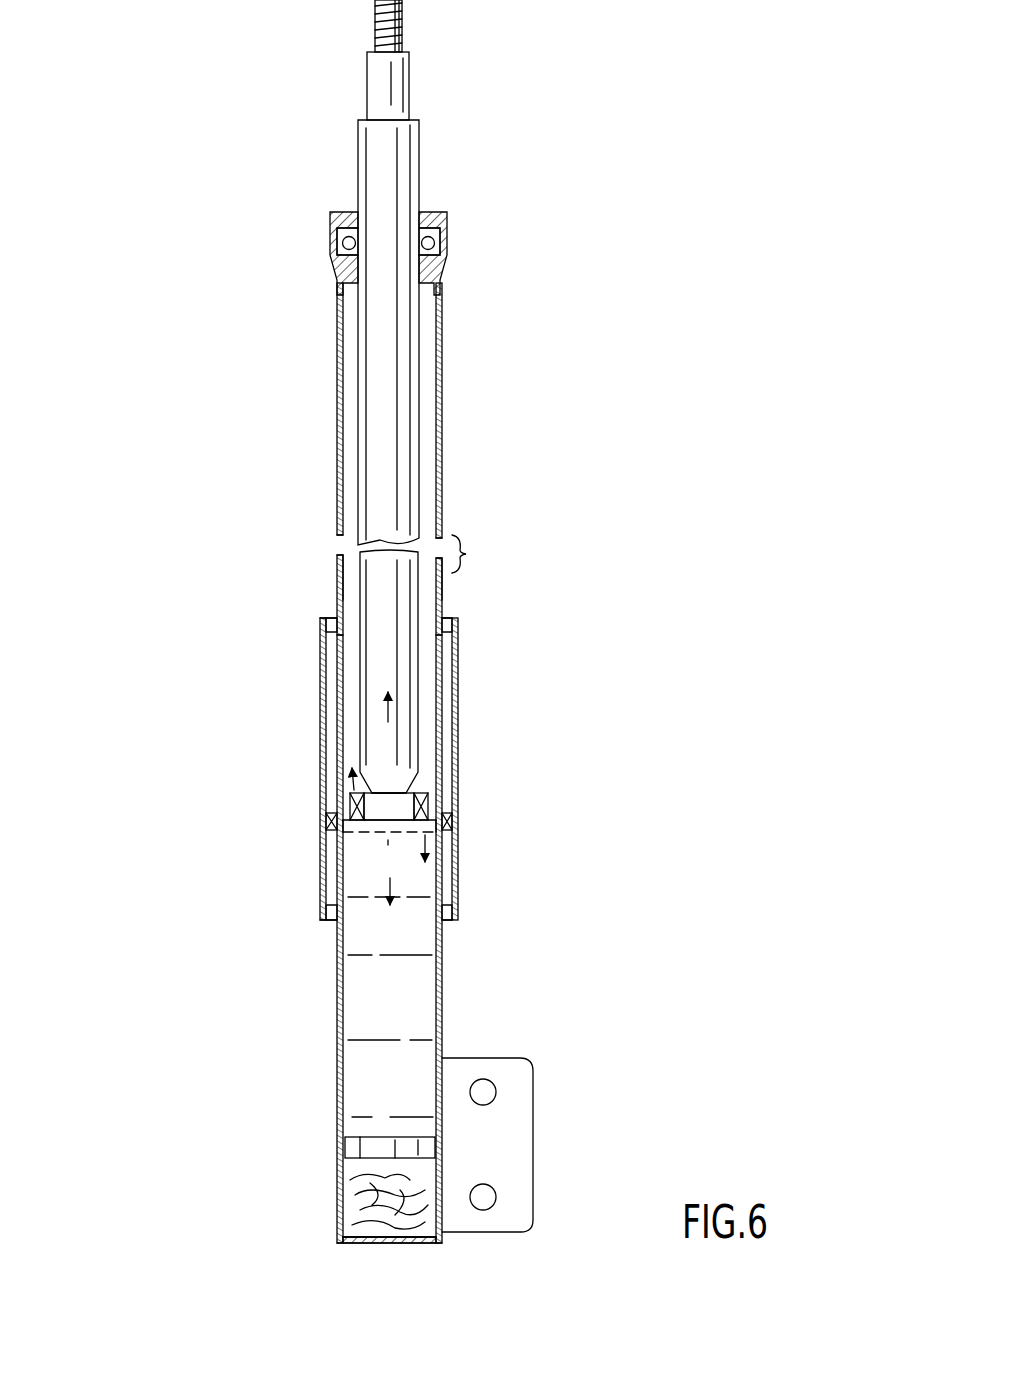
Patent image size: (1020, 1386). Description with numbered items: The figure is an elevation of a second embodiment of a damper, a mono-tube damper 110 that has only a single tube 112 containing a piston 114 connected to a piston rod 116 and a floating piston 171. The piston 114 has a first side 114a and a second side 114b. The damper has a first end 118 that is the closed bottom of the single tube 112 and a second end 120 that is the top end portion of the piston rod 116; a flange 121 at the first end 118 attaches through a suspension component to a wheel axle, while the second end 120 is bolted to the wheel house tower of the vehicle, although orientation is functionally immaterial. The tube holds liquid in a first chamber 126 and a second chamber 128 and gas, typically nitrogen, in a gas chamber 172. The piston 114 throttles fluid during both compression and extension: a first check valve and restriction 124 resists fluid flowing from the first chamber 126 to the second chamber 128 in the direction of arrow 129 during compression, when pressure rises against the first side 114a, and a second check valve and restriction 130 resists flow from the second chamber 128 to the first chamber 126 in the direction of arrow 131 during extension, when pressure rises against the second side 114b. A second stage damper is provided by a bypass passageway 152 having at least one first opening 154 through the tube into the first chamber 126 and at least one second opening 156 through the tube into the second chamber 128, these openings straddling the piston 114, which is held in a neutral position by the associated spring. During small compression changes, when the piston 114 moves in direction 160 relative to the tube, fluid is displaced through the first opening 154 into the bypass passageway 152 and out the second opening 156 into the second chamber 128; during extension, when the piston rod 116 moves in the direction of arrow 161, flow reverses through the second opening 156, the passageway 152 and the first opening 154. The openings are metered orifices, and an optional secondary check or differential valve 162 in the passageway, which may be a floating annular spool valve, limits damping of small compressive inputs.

The mono-tube damper 110 is at (450, 362).
The single tube 112 is at (443, 391).
The piston 114 is at (390, 852).
The first side of piston 114a is at (388, 830).
The second side of piston 114b is at (418, 790).
The piston rod 116 is at (382, 511).
The first end 118 is at (380, 1243).
The second end 120 is at (402, 13).
The flange 121 is at (510, 1133).
The first check valve and restriction 124 is at (350, 800).
The first chamber 126 is at (443, 973).
The second chamber 128 is at (432, 590).
The arrow 129 is at (350, 785).
The second check valve and restriction 130 is at (428, 800).
The arrow 131 is at (427, 850).
The bypass passageway 152 is at (452, 672).
The first opening 154 is at (326, 912).
The second opening 156 is at (326, 626).
The direction 160 is at (388, 882).
The arrow 161 is at (390, 712).
The secondary check or differential valve 162 is at (326, 822).
The floating piston 171 is at (358, 1148).
The gas chamber 172 is at (358, 1212).